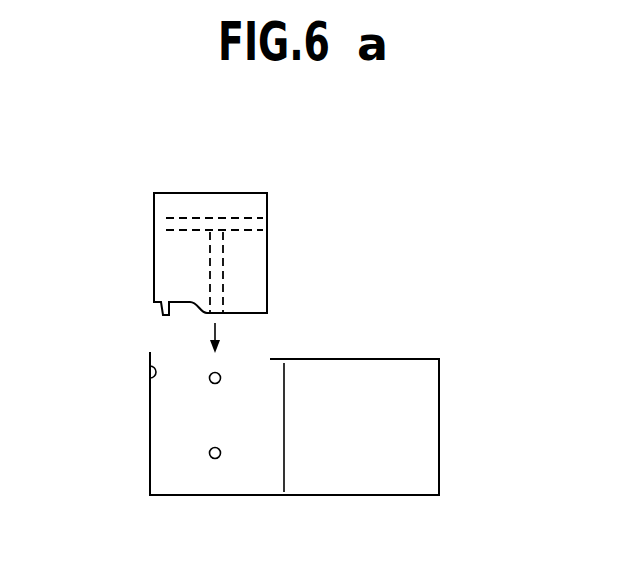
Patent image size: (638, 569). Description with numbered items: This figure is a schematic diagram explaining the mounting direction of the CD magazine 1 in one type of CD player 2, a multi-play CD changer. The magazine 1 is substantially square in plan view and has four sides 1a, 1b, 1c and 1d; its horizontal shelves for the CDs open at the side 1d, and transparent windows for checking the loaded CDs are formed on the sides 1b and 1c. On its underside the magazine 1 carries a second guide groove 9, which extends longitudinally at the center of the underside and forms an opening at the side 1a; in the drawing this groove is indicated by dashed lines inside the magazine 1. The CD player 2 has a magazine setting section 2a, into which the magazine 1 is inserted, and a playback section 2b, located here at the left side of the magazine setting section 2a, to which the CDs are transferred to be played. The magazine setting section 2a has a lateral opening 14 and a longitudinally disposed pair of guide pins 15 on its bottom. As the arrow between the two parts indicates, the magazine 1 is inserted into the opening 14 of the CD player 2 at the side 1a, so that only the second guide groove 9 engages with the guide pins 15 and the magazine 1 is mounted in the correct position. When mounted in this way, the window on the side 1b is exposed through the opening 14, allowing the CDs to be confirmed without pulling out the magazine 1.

The CD magazine 1 is at (294, 198).
The side 1a is at (243, 313).
The side 1b is at (210, 193).
The side 1c is at (163, 229).
The side 1d is at (267, 274).
The second guide groove 9 is at (208, 258).
The CD player 2 is at (393, 359).
The magazine setting section 2a is at (130, 469).
The playback section 2b is at (452, 420).
The lateral opening 14 is at (156, 370).
The guide pins 15 is at (211, 381).